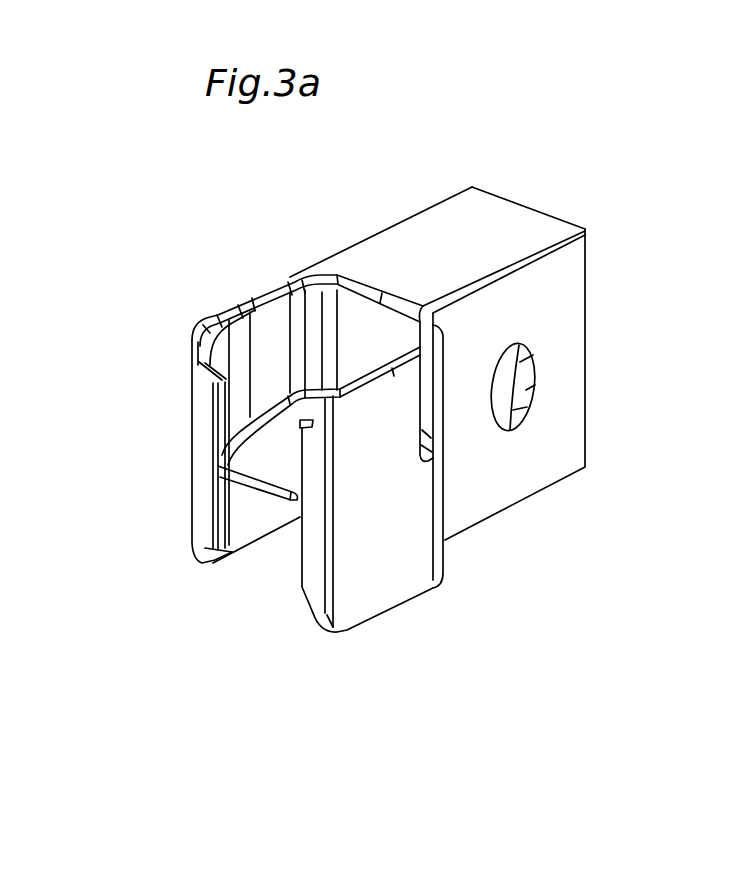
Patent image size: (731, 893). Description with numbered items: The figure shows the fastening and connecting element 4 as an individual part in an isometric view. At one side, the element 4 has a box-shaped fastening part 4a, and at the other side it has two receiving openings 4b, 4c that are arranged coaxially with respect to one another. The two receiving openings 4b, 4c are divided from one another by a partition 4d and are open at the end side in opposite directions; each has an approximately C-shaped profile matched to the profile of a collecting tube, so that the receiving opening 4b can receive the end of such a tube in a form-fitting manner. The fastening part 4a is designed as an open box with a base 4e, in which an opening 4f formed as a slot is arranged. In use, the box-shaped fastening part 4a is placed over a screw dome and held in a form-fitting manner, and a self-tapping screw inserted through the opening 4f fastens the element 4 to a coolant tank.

The fastening and connecting element 4 is at (458, 140).
The fastening part 4a is at (530, 207).
The receiving opening 4b is at (270, 555).
The receiving opening 4c is at (273, 343).
The partition 4d is at (263, 443).
The base 4e is at (560, 323).
The opening 4f is at (510, 395).